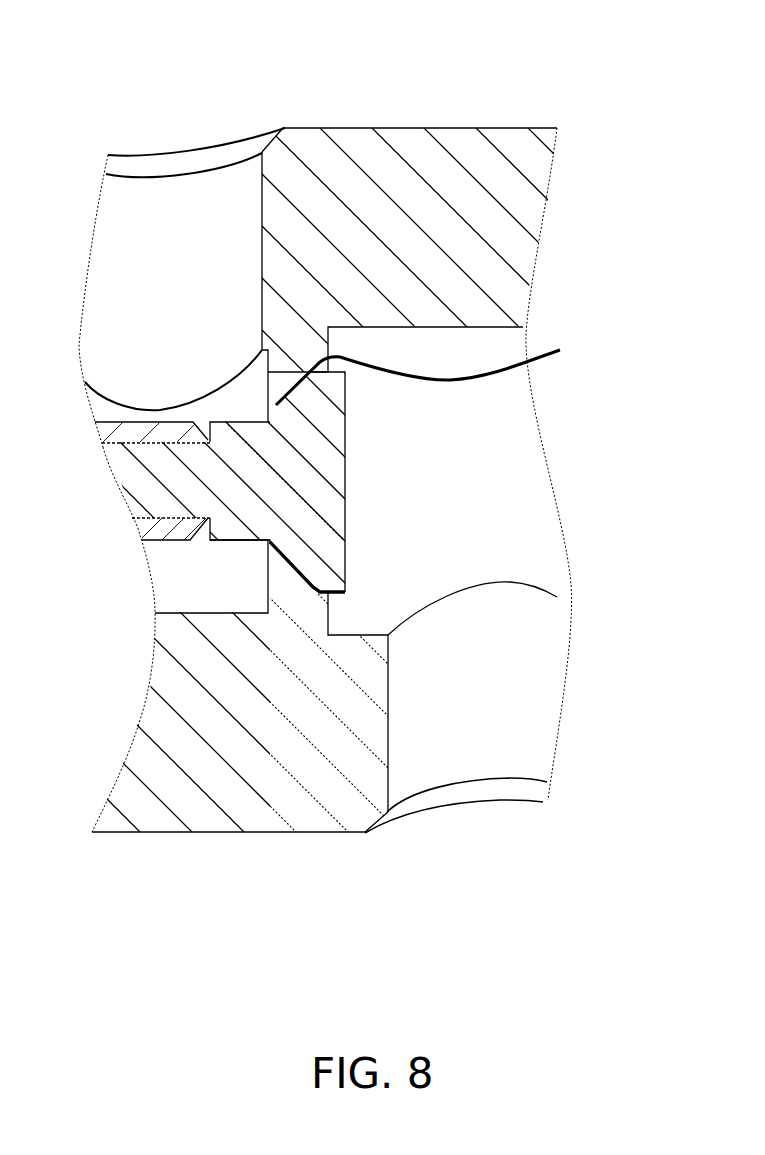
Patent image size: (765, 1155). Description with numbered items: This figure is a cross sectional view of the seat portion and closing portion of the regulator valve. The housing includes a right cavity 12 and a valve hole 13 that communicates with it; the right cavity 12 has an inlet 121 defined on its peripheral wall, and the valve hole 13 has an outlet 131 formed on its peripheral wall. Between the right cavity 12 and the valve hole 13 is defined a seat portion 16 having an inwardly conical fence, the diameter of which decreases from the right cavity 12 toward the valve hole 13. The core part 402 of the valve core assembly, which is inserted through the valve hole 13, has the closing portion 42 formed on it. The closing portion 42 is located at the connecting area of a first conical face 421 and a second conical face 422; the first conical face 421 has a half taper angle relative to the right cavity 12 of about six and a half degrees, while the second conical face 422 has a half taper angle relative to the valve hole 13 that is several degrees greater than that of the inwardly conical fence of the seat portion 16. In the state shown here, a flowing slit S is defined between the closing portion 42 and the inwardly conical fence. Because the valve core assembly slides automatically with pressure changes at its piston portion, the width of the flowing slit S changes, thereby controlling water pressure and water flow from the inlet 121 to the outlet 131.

The right cavity 12 is at (517, 523).
The inlet 121 is at (459, 765).
The valve hole 13 is at (177, 574).
The outlet 131 is at (185, 212).
The seat portion 16 is at (300, 377).
The closing portion 42 is at (432, 462).
The first conical face 421 is at (322, 590).
The second conical face 422 is at (305, 582).
The core part 402 is at (317, 485).
The flowing slit S is at (303, 360).